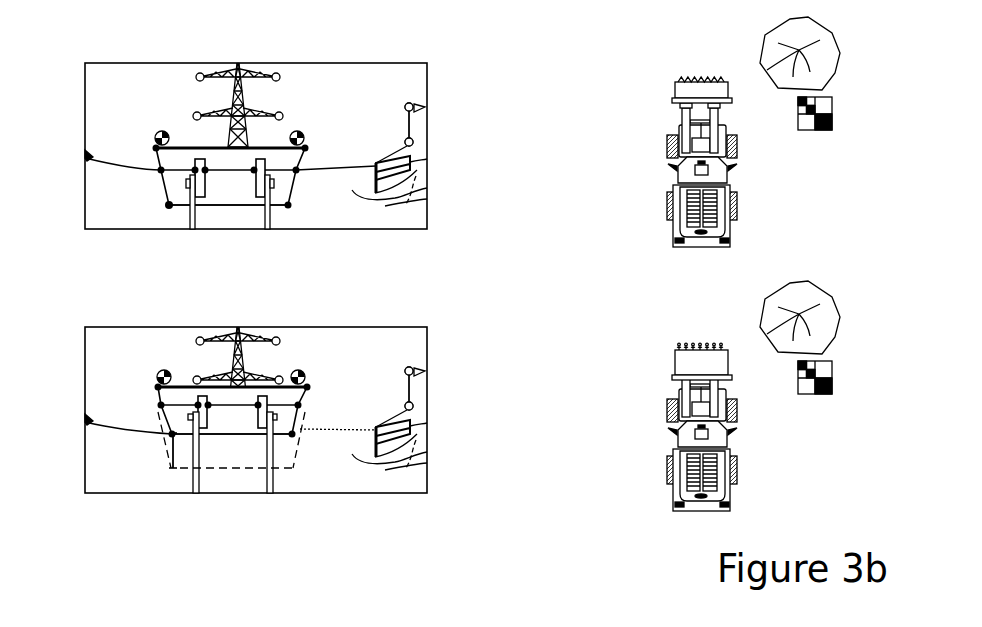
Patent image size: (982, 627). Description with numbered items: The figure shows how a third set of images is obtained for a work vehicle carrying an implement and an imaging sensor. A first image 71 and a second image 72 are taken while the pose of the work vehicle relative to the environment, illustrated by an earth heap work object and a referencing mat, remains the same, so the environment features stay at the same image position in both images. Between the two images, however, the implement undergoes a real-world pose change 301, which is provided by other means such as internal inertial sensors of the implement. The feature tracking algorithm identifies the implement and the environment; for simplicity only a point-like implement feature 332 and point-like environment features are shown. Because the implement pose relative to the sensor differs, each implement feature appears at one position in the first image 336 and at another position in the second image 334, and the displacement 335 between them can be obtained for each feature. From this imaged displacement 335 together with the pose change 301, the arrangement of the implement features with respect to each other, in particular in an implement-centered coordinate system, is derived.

The first image 71 is at (310, 63).
The second image 72 is at (310, 327).
The pose change of the implement 301 is at (662, 356).
The implement feature 332 is at (169, 205).
The position of implement feature in the second image 334 is at (170, 434).
The displacement of the implement features 335 is at (171, 455).
The position of implement feature in the first image 336 is at (171, 468).